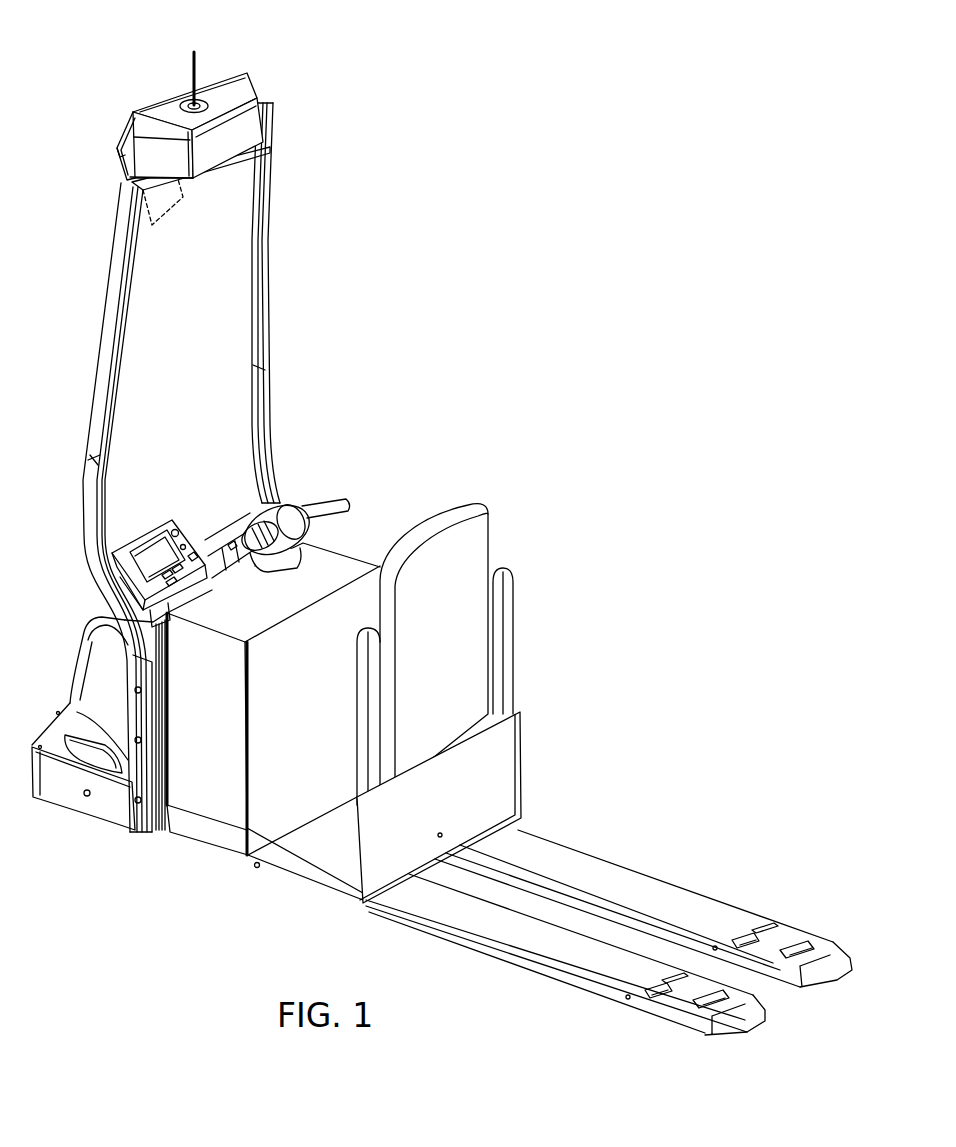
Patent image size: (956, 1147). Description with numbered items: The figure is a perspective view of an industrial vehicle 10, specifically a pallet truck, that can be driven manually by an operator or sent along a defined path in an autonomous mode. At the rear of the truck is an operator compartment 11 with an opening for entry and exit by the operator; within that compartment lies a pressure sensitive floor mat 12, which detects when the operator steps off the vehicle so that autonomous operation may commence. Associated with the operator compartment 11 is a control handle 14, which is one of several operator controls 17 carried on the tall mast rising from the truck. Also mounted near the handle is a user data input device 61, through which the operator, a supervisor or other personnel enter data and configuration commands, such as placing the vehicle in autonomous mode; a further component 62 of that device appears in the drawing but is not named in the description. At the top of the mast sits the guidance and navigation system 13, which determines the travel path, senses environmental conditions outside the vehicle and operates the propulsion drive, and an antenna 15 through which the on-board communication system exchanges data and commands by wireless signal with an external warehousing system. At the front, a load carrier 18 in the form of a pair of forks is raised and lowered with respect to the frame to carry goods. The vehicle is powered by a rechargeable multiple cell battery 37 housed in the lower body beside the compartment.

The industrial vehicle 10 is at (442, 543).
The operator compartment 11 is at (314, 724).
The pressure sensitive floor mat 12 is at (340, 860).
The guidance and navigation system 13 is at (132, 140).
The control handle 14 is at (313, 500).
The antenna 15 is at (188, 66).
The operator controls 17 is at (300, 478).
The load carrier 18 is at (557, 863).
The multiple cell battery 37 is at (197, 798).
The user data input device 61 is at (125, 558).
The display 62 is at (150, 553).